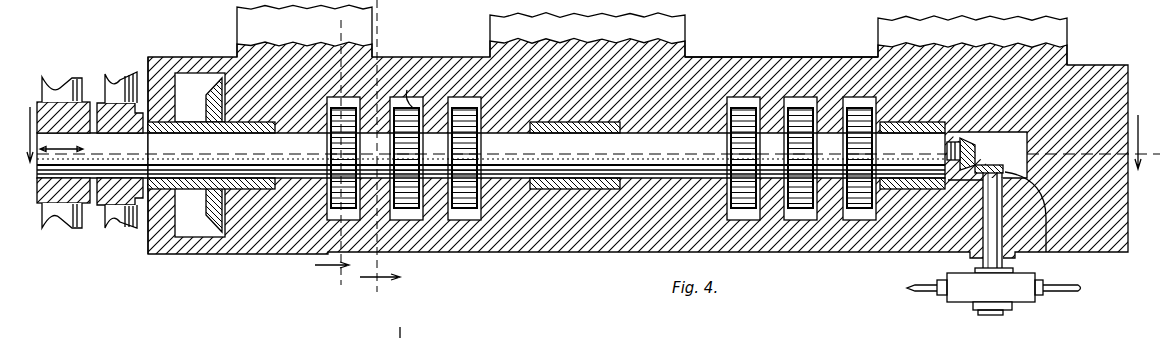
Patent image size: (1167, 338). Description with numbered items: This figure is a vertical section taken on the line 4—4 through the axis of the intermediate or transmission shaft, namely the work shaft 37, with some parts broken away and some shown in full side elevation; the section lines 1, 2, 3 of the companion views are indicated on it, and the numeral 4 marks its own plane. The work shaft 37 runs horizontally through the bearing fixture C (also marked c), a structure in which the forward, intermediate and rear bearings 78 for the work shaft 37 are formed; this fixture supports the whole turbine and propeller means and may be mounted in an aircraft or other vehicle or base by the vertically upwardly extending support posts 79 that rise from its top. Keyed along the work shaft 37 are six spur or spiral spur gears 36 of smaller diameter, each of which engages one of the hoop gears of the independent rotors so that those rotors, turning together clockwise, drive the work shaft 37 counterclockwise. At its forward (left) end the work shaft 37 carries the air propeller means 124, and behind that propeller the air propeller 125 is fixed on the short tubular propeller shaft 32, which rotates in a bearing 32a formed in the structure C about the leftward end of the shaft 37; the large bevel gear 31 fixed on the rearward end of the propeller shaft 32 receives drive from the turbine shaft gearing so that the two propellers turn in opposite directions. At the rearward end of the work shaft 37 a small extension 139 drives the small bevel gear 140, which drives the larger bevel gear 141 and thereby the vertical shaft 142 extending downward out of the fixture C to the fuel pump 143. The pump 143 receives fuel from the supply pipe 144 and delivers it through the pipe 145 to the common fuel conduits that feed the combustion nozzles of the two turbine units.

The bearing fixture C is at (243, 65).
The bearing fixture c is at (721, 69).
The support posts 79 is at (376, 33).
The bearings 78 is at (248, 190).
The spur or spiral spur gears 36 is at (333, 144).
The work shaft 37 is at (598, 155).
The air propeller means 124 is at (57, 88).
The air propeller 125 is at (113, 76).
The propeller shaft 32 is at (148, 228).
The bearing 32a is at (157, 125).
The large bevel gear 31 is at (202, 237).
The small extension 139 is at (947, 146).
The small bevel gear 140 is at (970, 146).
The larger bevel gear 141 is at (1038, 222).
The vertical shaft 142 is at (985, 228).
The fuel pump 143 is at (1020, 292).
The supply pipe 144 is at (1065, 292).
The pipe 145 is at (908, 288).
The compressor rotor 1 is at (588, 125).
The compressor rotor 2 is at (323, 152).
The compressor rotor 3 is at (380, 148).
The compressor rotor 4 is at (407, 330).